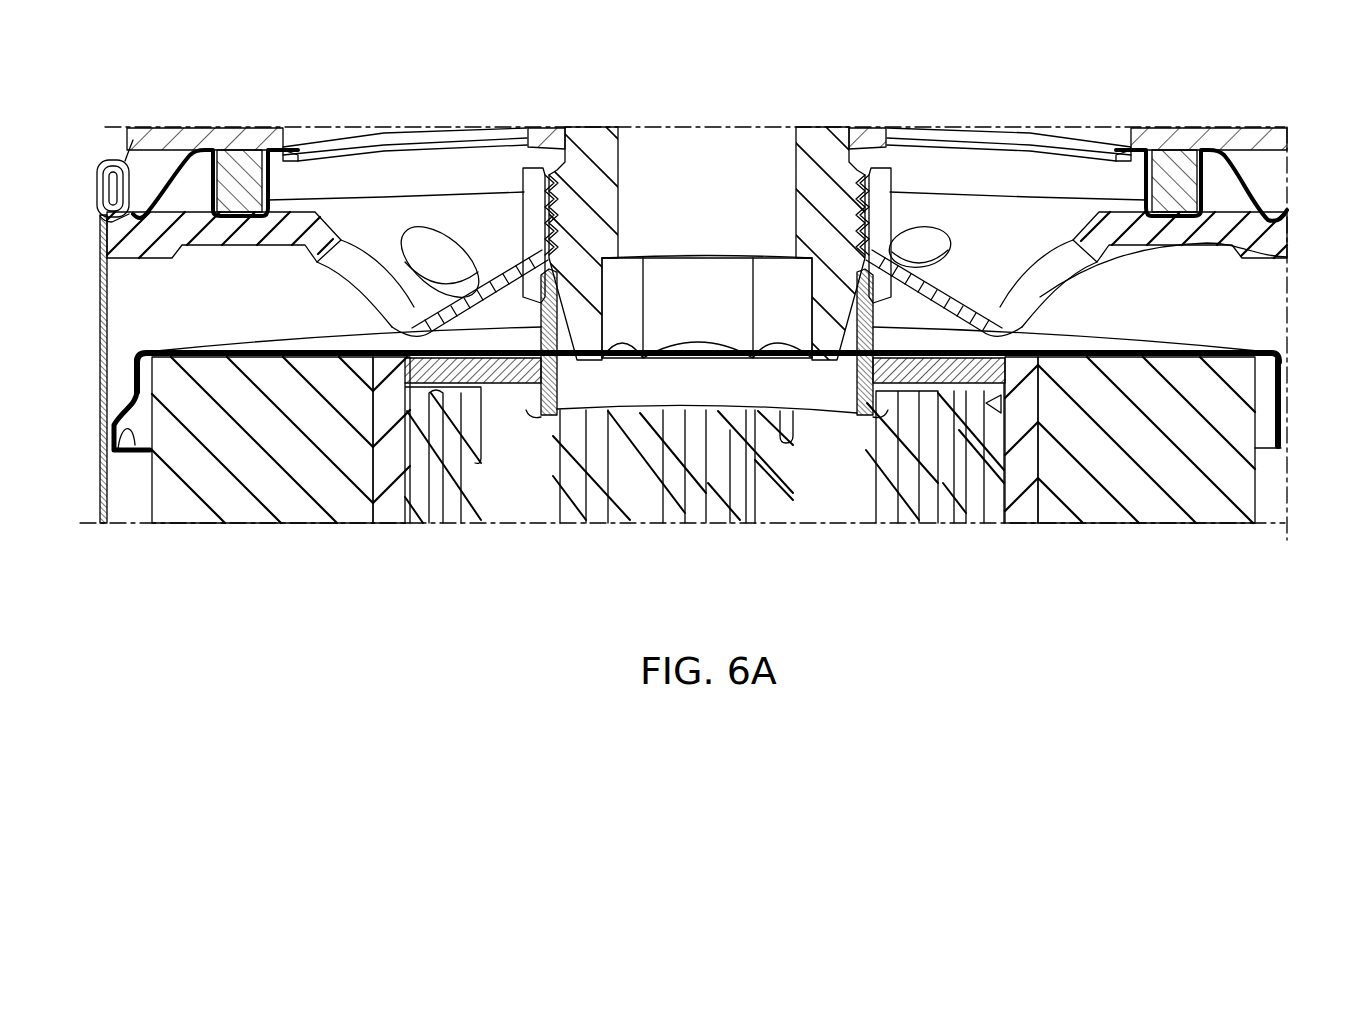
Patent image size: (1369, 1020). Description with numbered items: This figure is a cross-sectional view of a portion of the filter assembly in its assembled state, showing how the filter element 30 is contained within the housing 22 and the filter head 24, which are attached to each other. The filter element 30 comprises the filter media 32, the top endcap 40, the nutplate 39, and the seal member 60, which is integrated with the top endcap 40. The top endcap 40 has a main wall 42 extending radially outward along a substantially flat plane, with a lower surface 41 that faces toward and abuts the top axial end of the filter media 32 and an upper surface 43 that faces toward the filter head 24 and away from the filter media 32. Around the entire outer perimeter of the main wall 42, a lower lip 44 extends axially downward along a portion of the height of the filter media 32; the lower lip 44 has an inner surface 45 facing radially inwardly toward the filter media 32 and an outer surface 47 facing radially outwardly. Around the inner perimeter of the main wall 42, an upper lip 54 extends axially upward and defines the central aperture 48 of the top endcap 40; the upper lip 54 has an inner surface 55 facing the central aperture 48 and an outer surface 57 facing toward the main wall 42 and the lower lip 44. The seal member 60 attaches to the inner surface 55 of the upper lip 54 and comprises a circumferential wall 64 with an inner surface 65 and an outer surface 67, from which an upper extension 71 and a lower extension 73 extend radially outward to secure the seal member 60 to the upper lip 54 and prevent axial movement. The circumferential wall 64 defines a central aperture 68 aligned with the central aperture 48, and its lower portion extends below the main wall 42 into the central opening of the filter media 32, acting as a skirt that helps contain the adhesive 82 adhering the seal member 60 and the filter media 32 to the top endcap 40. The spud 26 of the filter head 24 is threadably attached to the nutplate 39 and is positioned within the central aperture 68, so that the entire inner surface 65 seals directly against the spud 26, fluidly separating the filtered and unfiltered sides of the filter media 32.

The housing 22 is at (103, 293).
The filter head 24 is at (890, 255).
The spud 26 is at (1068, 127).
The filter element 30 is at (1287, 420).
The filter media 32 is at (1240, 495).
The nutplate 39 is at (1268, 262).
The top endcap 40 is at (1247, 340).
The lower surface 41 is at (372, 380).
The main wall 42 is at (214, 360).
The upper surface 43 is at (365, 352).
The lower lip 44 is at (112, 398).
The inner surface 45 is at (135, 445).
The outer surface 47 is at (136, 357).
The central aperture 48 is at (580, 365).
The upper lip 54 is at (877, 296).
The inner surface 55 is at (853, 420).
The outer surface 57 is at (873, 330).
The seal member 60 is at (638, 414).
The circumferential wall 64 is at (745, 378).
The inner surface 65 is at (694, 390).
The outer surface 67 is at (540, 420).
The central aperture 68 is at (512, 502).
The upper extension 71 is at (530, 297).
The lower extension 73 is at (541, 330).
The adhesive 82 is at (957, 368).